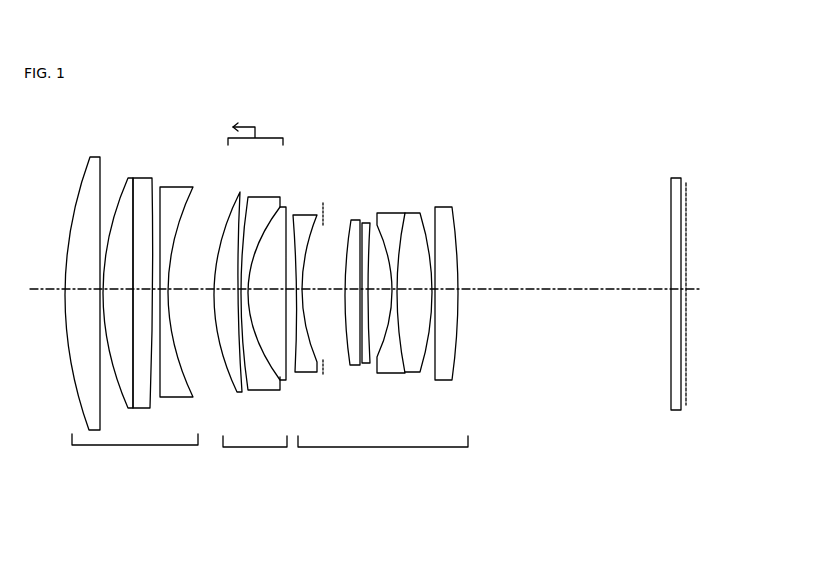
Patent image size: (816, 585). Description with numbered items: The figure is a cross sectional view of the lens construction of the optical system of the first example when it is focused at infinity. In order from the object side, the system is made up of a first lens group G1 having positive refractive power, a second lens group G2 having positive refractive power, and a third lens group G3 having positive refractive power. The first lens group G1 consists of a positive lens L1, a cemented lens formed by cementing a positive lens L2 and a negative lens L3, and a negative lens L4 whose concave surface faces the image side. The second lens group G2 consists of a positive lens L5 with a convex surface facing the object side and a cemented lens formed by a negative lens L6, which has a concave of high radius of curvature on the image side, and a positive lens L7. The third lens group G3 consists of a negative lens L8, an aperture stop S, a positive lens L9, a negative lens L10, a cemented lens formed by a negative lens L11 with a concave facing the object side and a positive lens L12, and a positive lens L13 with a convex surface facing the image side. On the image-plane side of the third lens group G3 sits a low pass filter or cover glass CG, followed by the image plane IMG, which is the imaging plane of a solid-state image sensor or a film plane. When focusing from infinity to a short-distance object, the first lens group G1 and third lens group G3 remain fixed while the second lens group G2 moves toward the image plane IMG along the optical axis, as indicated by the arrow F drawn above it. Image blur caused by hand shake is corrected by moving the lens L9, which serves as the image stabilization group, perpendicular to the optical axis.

The lens L1 is at (82, 271).
The lens L2 is at (118, 273).
The lens L3 is at (140, 266).
The lens L4 is at (176, 266).
The lens L5 is at (228, 273).
The lens L6 is at (260, 274).
The lens L7 is at (270, 269).
The lens L8 is at (304, 275).
The lens L9 is at (347, 274).
The lens L10 is at (363, 261).
The lens L11 is at (389, 276).
The lens L12 is at (419, 269).
The lens L13 is at (451, 271).
The aperture stop S is at (318, 268).
The focusing group movement direction F is at (255, 125).
The first lens group G1 is at (135, 453).
The second lens group G2 is at (255, 454).
The third lens group G3 is at (383, 454).
The cover glass CG is at (659, 323).
The image plane IMG is at (671, 265).